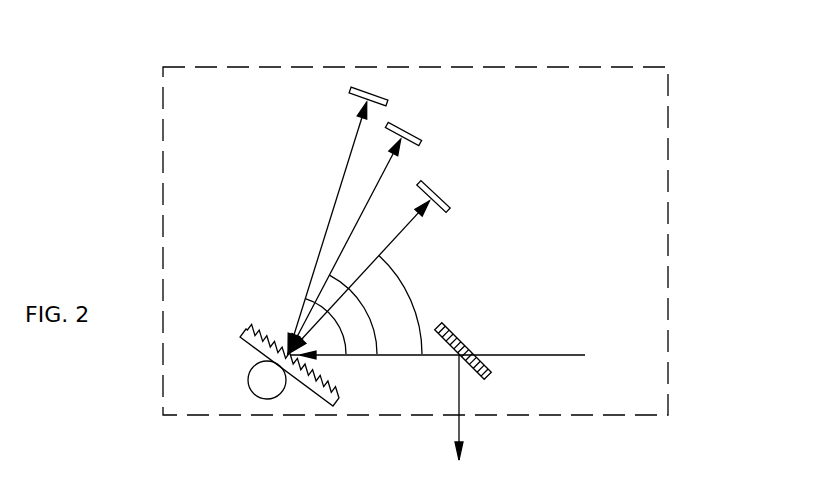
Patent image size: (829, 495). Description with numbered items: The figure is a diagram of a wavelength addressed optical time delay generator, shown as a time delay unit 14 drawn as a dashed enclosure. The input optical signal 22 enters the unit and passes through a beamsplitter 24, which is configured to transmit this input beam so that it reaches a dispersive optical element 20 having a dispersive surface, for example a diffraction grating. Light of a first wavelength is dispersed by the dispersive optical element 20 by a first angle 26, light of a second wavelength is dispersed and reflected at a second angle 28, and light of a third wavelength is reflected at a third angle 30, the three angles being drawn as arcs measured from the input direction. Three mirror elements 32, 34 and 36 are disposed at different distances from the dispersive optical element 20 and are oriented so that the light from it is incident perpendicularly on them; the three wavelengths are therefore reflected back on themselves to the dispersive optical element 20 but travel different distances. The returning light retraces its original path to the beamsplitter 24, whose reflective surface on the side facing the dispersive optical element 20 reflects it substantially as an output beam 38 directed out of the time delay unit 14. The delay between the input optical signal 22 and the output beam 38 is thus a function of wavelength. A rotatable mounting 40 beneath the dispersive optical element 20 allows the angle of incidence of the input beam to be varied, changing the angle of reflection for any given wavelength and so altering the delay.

The time delay unit 14 is at (622, 63).
The dispersive optical element 20 is at (247, 338).
The input optical signal 22 is at (580, 355).
The beamsplitter 24 is at (452, 326).
The first angle 26 is at (345, 341).
The second angle 28 is at (363, 311).
The third angle 30 is at (410, 294).
The mirror element 32 is at (377, 89).
The mirror element 34 is at (412, 136).
The mirror element 36 is at (447, 197).
The output beam 38 is at (460, 396).
The rotatable mounting 40 is at (250, 389).